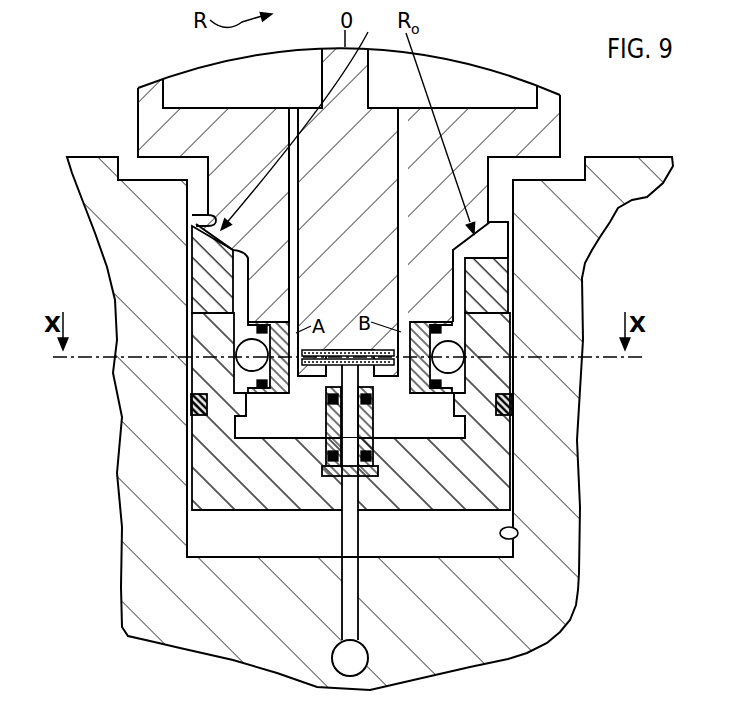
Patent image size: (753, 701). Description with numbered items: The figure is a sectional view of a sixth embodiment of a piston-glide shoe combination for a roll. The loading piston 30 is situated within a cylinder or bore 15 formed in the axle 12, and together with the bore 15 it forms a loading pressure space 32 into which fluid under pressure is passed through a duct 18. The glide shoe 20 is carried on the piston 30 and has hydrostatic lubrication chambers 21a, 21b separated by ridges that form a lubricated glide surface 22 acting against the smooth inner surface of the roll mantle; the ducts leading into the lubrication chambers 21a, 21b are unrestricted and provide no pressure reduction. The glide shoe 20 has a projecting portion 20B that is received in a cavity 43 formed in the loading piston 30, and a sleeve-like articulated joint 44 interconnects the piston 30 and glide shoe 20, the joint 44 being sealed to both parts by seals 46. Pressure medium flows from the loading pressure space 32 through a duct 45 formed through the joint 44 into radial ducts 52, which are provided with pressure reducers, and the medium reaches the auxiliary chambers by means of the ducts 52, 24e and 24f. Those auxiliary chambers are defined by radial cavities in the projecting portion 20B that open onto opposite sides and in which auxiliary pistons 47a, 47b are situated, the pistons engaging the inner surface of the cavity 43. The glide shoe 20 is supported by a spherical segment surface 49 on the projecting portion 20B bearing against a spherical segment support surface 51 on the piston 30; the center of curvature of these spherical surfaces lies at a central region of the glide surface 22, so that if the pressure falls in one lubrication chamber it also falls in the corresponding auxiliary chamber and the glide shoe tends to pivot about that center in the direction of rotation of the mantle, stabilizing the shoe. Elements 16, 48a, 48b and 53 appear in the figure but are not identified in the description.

The axle 12 is at (552, 515).
The cylinder or bore 15 is at (513, 540).
The sealing ring 16 is at (517, 405).
The duct 18 is at (350, 627).
The glide shoe 20 is at (147, 113).
The projecting portion 20B is at (512, 250).
The hydrostatic lubrication chamber 21a is at (182, 97).
The hydrostatic lubrication chamber 21b is at (503, 88).
The glide surface 22 is at (200, 63).
The duct 24e is at (293, 277).
The duct 24f is at (500, 300).
The loading piston 30 is at (490, 465).
The loading pressure space 32 is at (242, 540).
The cavity 43 is at (250, 428).
The sleeve-like articulated joint 44 is at (327, 426).
The duct 45 is at (350, 428).
The seals 46 is at (328, 400).
The auxiliary piston 47a is at (253, 330).
The auxiliary piston 47b is at (440, 331).
The ball 48a is at (247, 362).
The ball 48b is at (458, 350).
The spherical segment surface 49 is at (212, 266).
The spherical segment support surface 51 is at (212, 218).
The ducts 52 is at (463, 377).
The sealing ring 53 is at (192, 392).